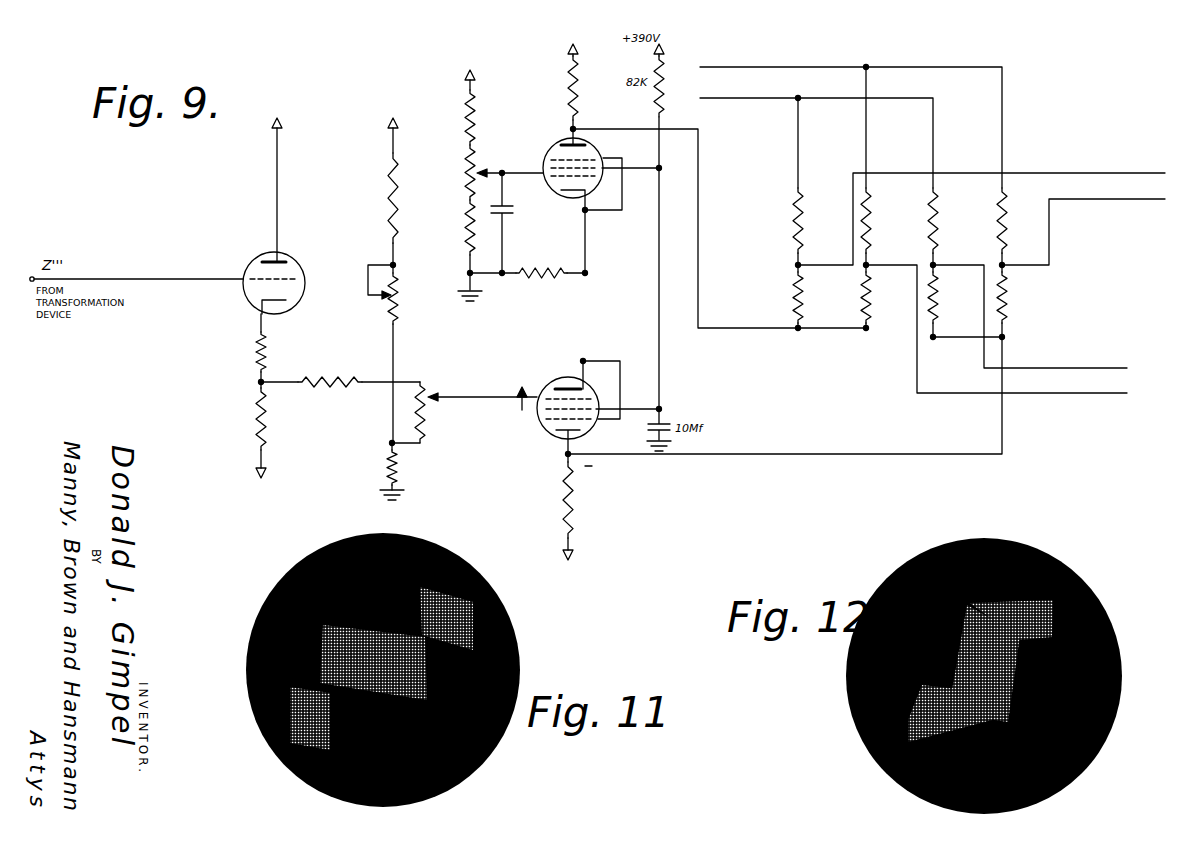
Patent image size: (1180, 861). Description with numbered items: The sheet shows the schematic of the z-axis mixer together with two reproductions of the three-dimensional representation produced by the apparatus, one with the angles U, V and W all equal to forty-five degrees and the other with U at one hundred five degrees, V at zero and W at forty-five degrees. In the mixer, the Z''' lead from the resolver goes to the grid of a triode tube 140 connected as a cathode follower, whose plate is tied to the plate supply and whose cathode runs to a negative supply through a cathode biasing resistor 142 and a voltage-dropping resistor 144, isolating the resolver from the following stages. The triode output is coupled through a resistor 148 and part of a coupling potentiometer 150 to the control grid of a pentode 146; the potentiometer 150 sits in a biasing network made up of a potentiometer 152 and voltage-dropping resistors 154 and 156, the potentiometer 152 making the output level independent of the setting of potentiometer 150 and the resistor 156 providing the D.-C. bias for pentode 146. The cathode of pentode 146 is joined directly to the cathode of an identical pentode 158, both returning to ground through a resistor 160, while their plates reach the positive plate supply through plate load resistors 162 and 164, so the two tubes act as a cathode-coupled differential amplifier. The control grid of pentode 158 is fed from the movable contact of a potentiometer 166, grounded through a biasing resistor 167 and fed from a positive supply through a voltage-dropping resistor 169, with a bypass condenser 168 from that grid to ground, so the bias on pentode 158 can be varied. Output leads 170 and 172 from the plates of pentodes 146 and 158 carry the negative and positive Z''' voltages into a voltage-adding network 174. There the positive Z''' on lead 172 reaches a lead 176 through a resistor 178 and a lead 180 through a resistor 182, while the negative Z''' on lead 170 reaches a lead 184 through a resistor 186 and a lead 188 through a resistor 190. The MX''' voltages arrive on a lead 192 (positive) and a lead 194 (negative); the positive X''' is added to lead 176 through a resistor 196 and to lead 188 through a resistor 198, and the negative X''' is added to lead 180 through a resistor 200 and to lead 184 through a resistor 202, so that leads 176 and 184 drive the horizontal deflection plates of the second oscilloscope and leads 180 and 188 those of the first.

The triode tube 140 is at (303, 263).
The cathode biasing resistor 142 is at (256, 338).
The voltage-dropping resistor 144 is at (256, 422).
The pentode 146 is at (562, 377).
The resistor 148 is at (334, 381).
The coupling potentiometer 150 is at (430, 385).
The potentiometer 152 is at (398, 287).
The voltage-dropping resistor 154 is at (397, 183).
The voltage-dropping resistor 156 is at (388, 462).
The pentode 158 is at (592, 183).
The resistor 160 is at (533, 270).
The plate load resistor 162 is at (577, 519).
The plate load resistor 164 is at (568, 97).
The potentiometer 166 is at (471, 178).
The biasing resistor 167 is at (465, 240).
The bypass condenser 168 is at (505, 220).
The voltage-dropping resistor 169 is at (478, 105).
The output lead 170 is at (745, 456).
The output lead 172 is at (699, 214).
The voltage-adding network 174 is at (905, 337).
The lead 176 is at (1032, 395).
The resistor 178 is at (869, 316).
The lead 180 is at (1022, 172).
The resistor 182 is at (801, 316).
The lead 184 is at (1045, 366).
The resistor 186 is at (936, 316).
The lead 188 is at (1050, 248).
The resistor 190 is at (1006, 318).
The lead 192 is at (832, 65).
The lead 194 is at (790, 96).
The resistor 196 is at (869, 205).
The resistor 198 is at (1005, 205).
The resistor 200 is at (803, 245).
The resistor 202 is at (937, 205).